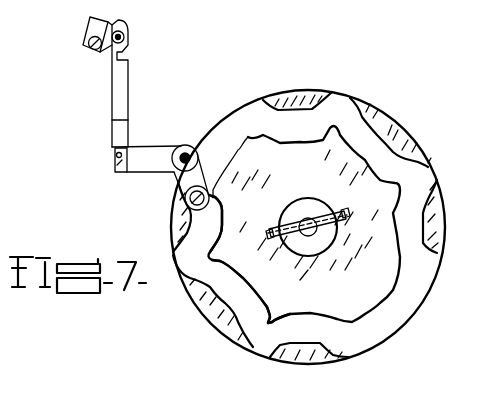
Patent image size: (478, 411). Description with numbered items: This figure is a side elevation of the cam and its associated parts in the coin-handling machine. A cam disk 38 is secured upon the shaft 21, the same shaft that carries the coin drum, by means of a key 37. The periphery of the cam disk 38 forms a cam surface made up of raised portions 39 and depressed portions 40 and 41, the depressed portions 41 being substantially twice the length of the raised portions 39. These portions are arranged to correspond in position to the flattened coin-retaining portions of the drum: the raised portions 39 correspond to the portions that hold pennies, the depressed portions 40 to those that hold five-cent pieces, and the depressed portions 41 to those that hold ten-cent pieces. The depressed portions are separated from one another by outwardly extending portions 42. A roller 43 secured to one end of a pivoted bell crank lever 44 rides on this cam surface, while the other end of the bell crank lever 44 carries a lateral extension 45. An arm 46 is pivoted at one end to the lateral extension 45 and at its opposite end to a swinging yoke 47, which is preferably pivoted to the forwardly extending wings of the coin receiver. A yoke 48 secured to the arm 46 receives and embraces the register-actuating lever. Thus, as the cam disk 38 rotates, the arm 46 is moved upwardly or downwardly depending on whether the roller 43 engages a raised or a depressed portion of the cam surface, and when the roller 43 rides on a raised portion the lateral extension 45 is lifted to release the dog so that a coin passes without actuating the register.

The shaft 21 is at (311, 220).
The key 37 is at (345, 215).
The cam disk 38 is at (430, 278).
The raised portions 39 is at (247, 138).
The depressed portions 40 is at (222, 225).
The depressed portions 41 is at (242, 286).
The outwardly extending portions 42 is at (269, 322).
The roller 43 is at (185, 197).
The bell crank lever 44 is at (167, 150).
The lateral extension 45 is at (125, 170).
The arm 46 is at (115, 133).
The swinging yoke 47 is at (88, 33).
The yoke 48 is at (122, 97).